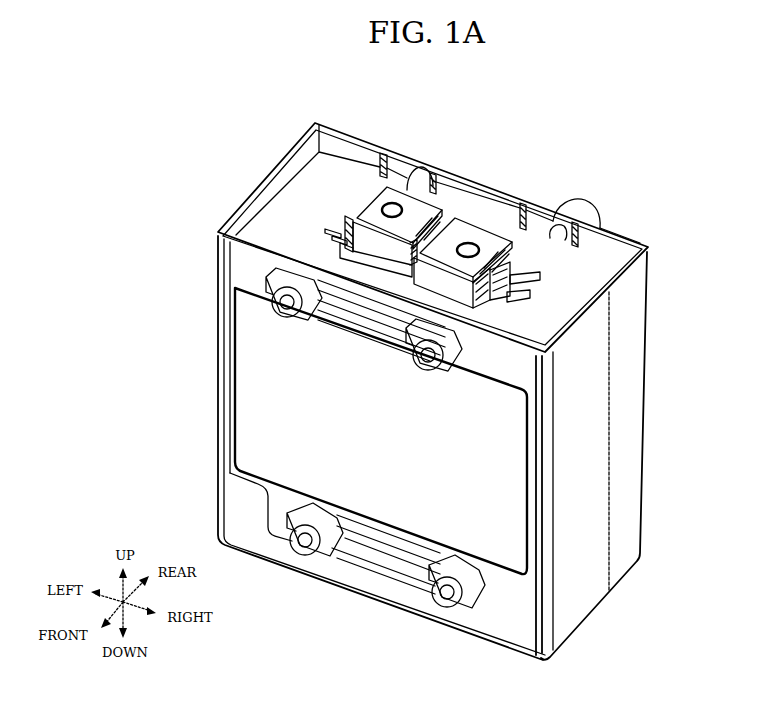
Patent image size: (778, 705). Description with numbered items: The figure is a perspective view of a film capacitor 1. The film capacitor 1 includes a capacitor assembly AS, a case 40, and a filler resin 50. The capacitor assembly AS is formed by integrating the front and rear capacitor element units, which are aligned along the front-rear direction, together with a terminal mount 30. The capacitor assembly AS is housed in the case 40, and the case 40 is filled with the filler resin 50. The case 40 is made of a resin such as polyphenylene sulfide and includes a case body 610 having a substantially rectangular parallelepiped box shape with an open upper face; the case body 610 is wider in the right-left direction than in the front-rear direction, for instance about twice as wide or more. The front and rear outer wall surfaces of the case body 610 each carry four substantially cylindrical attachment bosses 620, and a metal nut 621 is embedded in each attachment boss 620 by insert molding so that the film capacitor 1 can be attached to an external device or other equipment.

The film capacitor 1 is at (674, 186).
The terminal mount 30 is at (556, 345).
The case 40 is at (265, 163).
The filler resin 50 is at (578, 278).
The case body 610 is at (628, 367).
The attachment boss 620 is at (433, 158).
The metal nut 621 is at (276, 316).
The capacitor assembly AS is at (473, 217).